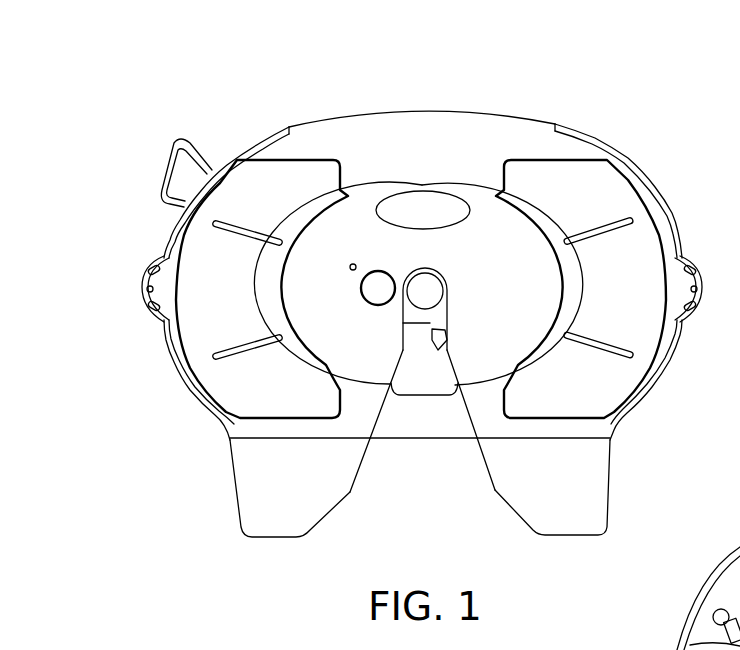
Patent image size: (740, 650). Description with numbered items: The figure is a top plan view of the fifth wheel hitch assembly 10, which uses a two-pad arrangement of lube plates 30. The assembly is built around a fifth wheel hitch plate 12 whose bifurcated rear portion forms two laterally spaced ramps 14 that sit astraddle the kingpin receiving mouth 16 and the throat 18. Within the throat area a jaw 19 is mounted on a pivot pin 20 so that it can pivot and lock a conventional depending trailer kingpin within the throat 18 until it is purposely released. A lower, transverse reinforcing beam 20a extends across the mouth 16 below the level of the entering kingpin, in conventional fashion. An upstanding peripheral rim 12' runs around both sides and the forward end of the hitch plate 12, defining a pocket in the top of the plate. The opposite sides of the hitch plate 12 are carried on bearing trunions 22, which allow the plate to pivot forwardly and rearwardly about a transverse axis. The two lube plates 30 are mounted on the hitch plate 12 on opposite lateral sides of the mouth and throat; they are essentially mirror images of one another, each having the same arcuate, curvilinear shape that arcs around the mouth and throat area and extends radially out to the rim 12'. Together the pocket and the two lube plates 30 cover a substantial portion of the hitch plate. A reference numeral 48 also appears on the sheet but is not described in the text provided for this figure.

The fifth wheel hitch assembly 10 is at (570, 97).
The fifth wheel hitch plate 12 is at (373, 260).
The upstanding peripheral rim 12' is at (629, 282).
The laterally spaced ramps 14 is at (238, 483).
The kingpin receiving mouth 16 is at (433, 508).
The throat 18 is at (427, 283).
The jaw 19 is at (427, 323).
The pivot pin 20 is at (378, 287).
The lower transverse reinforcing beam 20a is at (411, 425).
The bearing trunions 22 is at (150, 290).
The lube plates 30 is at (283, 177).
The adjacent figure element 48 is at (739, 595).